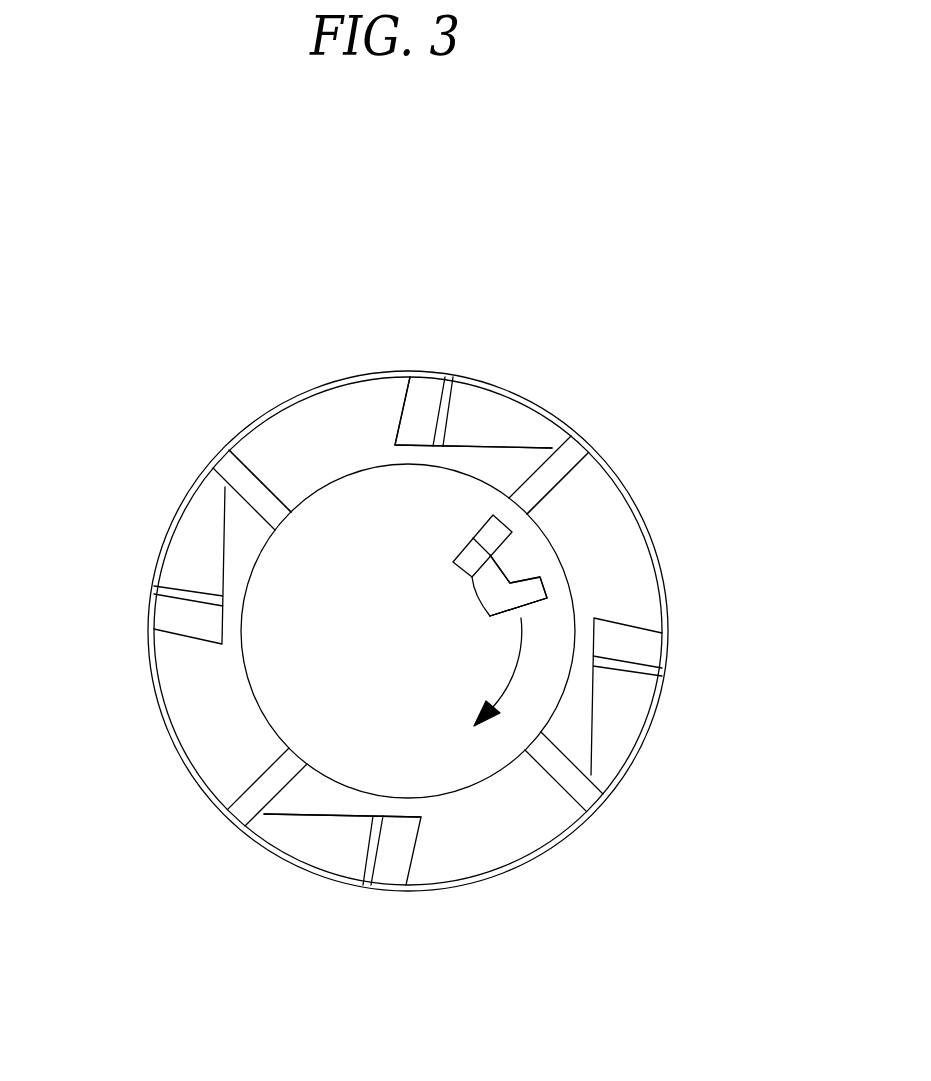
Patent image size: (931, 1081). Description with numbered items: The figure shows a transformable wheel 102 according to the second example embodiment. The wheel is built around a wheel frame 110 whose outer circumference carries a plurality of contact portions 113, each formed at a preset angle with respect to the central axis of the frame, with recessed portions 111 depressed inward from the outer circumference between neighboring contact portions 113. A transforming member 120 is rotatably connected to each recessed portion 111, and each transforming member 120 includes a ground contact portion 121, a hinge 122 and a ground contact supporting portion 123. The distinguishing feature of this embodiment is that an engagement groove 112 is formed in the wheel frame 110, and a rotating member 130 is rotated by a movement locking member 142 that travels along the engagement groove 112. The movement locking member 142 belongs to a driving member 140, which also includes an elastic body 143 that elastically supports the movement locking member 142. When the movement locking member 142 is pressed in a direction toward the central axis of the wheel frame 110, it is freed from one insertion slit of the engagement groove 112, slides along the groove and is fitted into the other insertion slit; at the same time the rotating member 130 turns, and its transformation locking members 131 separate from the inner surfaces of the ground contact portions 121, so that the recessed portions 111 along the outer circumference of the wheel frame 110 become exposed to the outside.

The transformable wheel 102 is at (399, 204).
The wheel frame 110 is at (329, 425).
The recessed portion 111 is at (200, 540).
The engagement groove 112 is at (523, 598).
The contact portion 113 is at (369, 378).
The transforming member 120 is at (434, 345).
The ground contact portion 121 is at (503, 388).
The hinge 122 is at (582, 440).
The ground contact supporting portion 123 is at (446, 400).
The rotating member 130 is at (268, 680).
The transformation locking member 131 is at (543, 487).
The driving member 140 is at (736, 528).
The movement locking member 142 is at (500, 532).
The elastic body 143 is at (473, 562).